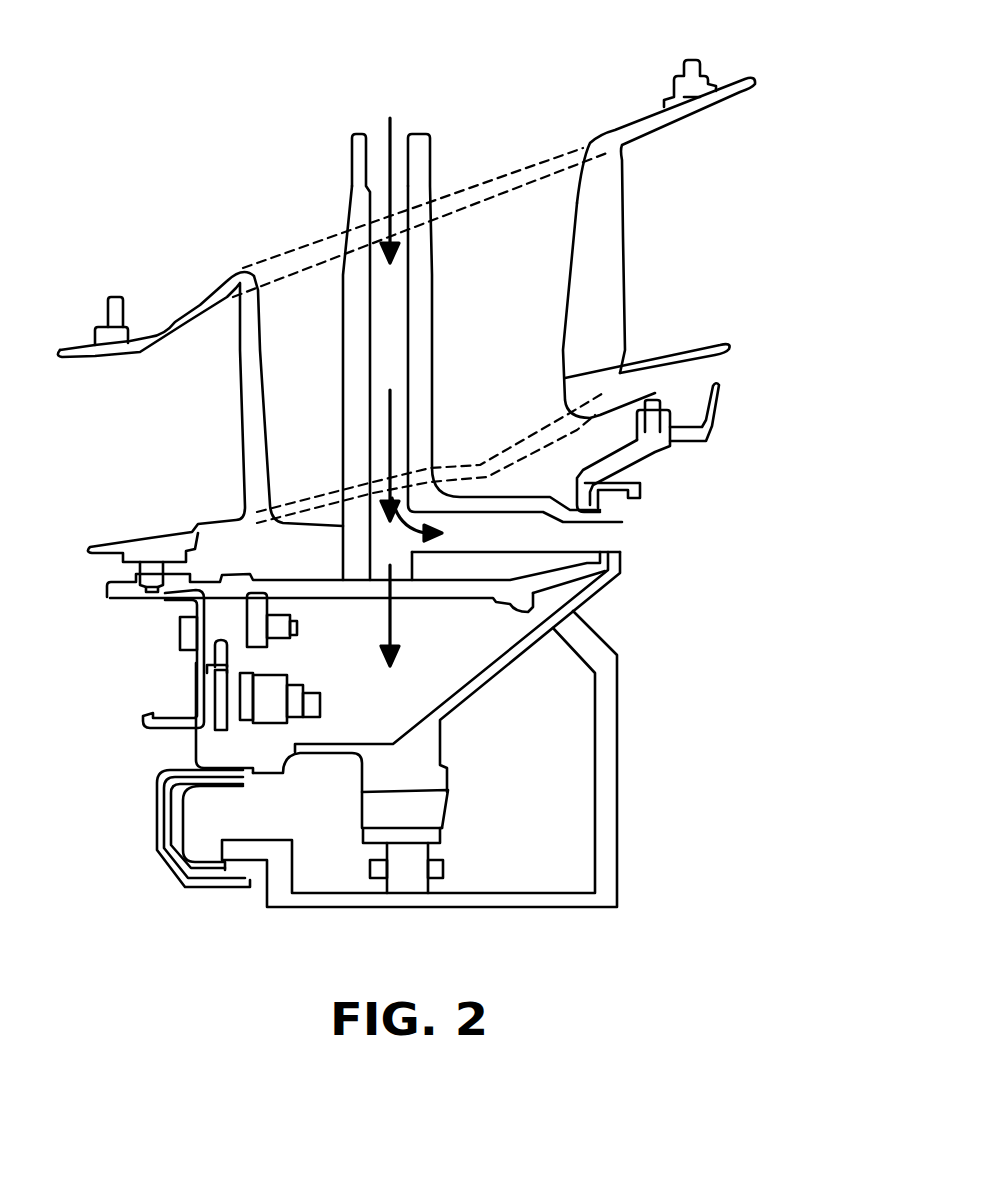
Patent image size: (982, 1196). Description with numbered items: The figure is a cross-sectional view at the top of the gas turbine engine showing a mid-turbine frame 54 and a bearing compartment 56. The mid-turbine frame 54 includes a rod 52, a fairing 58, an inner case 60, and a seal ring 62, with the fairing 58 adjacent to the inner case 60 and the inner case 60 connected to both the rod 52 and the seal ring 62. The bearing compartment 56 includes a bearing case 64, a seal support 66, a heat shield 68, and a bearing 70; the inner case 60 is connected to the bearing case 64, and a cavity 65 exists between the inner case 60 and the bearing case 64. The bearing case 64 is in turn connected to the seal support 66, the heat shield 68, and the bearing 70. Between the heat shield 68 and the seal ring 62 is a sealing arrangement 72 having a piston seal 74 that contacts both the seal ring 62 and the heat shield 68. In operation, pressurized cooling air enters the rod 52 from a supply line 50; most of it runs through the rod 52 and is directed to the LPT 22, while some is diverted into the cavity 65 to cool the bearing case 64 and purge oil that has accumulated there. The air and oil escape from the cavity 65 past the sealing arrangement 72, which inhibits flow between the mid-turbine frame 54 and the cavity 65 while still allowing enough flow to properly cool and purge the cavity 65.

The supply line 50 is at (392, 342).
The rod 52 is at (432, 338).
The mid-turbine frame 54 is at (742, 312).
The bearing compartment 56 is at (485, 759).
The fairing 58 is at (621, 237).
The inner case 60 is at (652, 455).
The seal ring 62 is at (108, 602).
The bearing case 64 is at (618, 834).
The cavity 65 is at (570, 600).
The seal support 66 is at (257, 792).
The heat shield 68 is at (155, 798).
The bearing 70 is at (442, 838).
The sealing arrangement 72 is at (160, 655).
The piston seal 74 is at (232, 666).
The LPT 22 is at (555, 537).